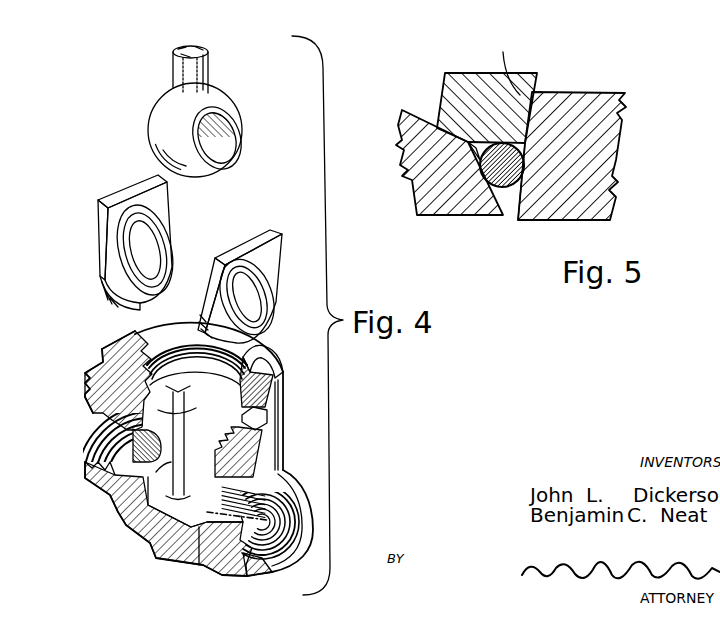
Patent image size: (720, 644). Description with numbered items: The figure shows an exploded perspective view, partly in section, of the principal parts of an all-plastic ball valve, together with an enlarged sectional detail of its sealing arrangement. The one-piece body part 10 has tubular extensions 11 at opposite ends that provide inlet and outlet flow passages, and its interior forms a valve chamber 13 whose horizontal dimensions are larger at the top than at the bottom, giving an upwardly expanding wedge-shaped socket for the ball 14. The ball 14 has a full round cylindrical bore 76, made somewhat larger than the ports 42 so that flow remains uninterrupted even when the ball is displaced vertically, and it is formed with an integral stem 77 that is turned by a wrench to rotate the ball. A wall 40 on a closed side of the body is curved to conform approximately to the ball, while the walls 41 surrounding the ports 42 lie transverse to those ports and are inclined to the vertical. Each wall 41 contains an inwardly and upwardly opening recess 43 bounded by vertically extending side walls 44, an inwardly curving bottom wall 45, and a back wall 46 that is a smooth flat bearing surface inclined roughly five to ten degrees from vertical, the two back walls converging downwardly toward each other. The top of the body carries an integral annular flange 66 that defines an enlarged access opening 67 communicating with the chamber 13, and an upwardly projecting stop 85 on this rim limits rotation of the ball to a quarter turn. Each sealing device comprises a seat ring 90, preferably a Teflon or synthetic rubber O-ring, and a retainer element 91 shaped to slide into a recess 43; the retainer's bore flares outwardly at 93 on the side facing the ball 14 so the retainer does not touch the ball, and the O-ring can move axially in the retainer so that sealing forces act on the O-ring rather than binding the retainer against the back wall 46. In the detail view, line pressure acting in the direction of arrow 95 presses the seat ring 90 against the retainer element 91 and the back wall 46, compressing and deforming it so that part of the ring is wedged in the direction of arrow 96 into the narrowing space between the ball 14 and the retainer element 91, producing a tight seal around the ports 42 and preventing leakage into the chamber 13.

In FIG. 4, the body part 10 is at (178, 555).
In FIG. 5, the body part 10 is at (571, 120).
In FIG. 4, the tubular extensions 11 is at (248, 560).
In FIG. 4, the valve chamber 13 is at (199, 530).
In FIG. 4, the ball 14 is at (160, 128).
In FIG. 5, the ball 14 is at (432, 178).
In FIG. 4, the chamber wall 40 is at (276, 377).
In FIG. 4, the chamber wall 41 is at (185, 435).
In FIG. 4, the ports 42 is at (175, 483).
In FIG. 5, the ports 42 is at (518, 214).
In FIG. 4, the recess 43 is at (143, 350).
In FIG. 4, the side walls 44 is at (178, 455).
In FIG. 4, the bottom wall 45 is at (172, 498).
In FIG. 4, the back wall 46 is at (193, 412).
In FIG. 5, the back wall 46 is at (506, 64).
In FIG. 4, the annular flange 66 is at (110, 363).
In FIG. 4, the access opening 67 is at (107, 400).
In FIG. 4, the bore 76 is at (241, 138).
In FIG. 4, the stem 77 is at (193, 73).
In FIG. 4, the stop 85 is at (260, 360).
In FIG. 4, the seat ring 90 is at (158, 240).
In FIG. 5, the seat ring 90 is at (487, 177).
In FIG. 4, the retainer element 91 is at (118, 225).
In FIG. 5, the retainer element 91 is at (462, 83).
In FIG. 4, the flared portion of bore 93 is at (153, 215).
In FIG. 5, the arrow 95 is at (510, 204).
In FIG. 5, the arrow 96 is at (476, 151).